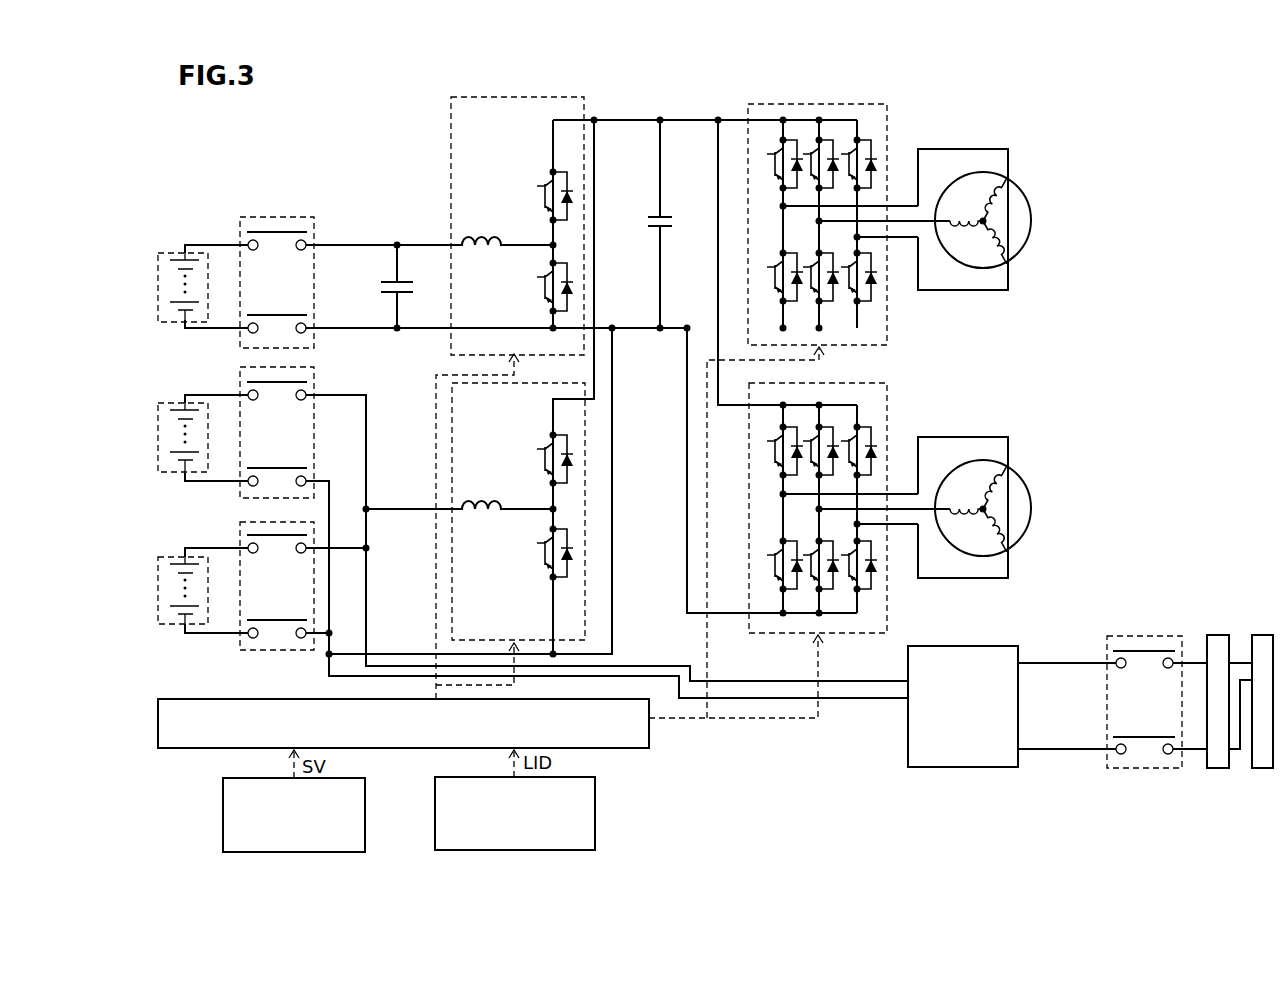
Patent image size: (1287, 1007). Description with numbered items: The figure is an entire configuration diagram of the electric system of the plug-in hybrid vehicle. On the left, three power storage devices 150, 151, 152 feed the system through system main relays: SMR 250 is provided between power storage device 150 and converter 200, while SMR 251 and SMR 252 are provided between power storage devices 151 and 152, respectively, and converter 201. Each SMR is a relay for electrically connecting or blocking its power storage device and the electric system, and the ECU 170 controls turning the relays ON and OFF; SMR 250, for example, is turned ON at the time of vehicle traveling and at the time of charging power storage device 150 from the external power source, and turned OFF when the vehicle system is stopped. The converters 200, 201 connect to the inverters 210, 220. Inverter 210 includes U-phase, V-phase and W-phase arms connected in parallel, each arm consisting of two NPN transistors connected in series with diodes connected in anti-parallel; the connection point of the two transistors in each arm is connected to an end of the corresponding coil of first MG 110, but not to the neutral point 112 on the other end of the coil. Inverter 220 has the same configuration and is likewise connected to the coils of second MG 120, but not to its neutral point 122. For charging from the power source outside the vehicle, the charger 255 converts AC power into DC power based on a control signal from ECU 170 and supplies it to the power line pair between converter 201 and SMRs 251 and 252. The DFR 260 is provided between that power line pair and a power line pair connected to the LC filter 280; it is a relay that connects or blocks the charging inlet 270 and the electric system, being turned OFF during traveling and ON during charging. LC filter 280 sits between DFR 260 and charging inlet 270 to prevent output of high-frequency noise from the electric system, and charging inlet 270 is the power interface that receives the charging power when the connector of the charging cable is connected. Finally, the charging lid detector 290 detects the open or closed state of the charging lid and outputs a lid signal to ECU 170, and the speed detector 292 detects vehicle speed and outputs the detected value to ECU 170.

The first MG 110 is at (1029, 252).
The neutral point 112 is at (981, 218).
The second MG 120 is at (1029, 540).
The neutral point 122 is at (981, 506).
The power storage device 150 is at (168, 252).
The power storage device 151 is at (170, 402).
The power storage device 152 is at (170, 556).
The ECU 170 is at (181, 699).
The converter 200 is at (527, 97).
The converter 201 is at (530, 382).
The inverter 210 is at (888, 325).
The inverter 220 is at (888, 612).
The SMR 250 is at (276, 216).
The SMR 251 is at (240, 383).
The SMR 252 is at (240, 536).
The charger 255 is at (948, 767).
The DFR 260 is at (1143, 635).
The charging inlet 270 is at (1260, 634).
The LC filter 280 is at (1216, 634).
The charging lid detector 290 is at (596, 821).
The speed detector 292 is at (222, 820).